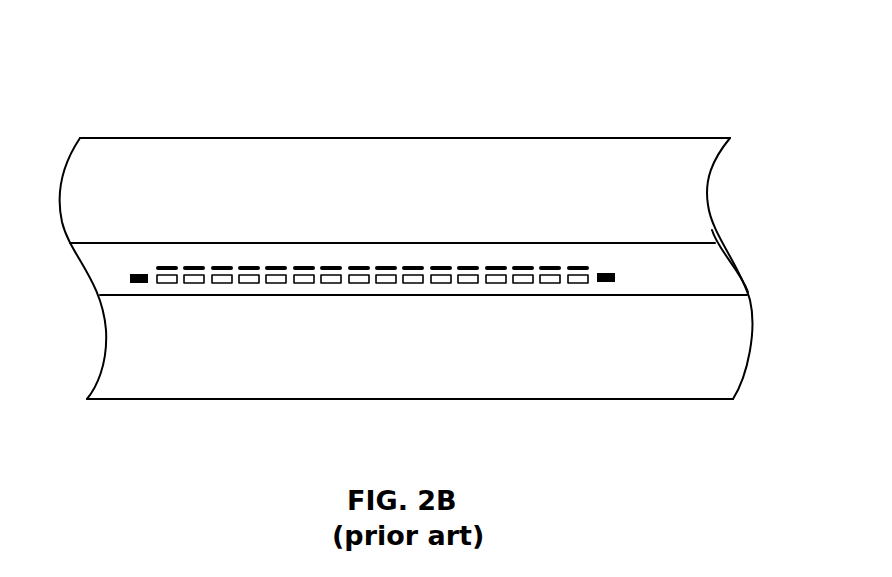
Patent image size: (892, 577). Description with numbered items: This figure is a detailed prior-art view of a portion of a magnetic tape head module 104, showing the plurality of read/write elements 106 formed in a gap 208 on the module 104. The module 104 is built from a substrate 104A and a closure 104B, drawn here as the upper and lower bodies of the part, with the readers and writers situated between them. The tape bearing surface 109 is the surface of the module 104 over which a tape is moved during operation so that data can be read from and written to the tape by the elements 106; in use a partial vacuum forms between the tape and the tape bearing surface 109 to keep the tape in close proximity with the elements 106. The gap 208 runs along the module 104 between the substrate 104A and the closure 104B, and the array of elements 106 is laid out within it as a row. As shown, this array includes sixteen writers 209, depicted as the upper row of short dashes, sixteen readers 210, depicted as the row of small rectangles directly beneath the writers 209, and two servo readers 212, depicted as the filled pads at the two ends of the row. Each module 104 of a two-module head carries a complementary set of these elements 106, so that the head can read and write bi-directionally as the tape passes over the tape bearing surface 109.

The module 104 is at (90, 86).
The substrate 104A is at (192, 138).
The closure 104B is at (250, 399).
The tape bearing surface 109 is at (330, 207).
The read/write elements 106 is at (640, 261).
The gap 208 is at (733, 262).
The writers 209 is at (494, 266).
The readers 210 is at (494, 284).
The servo readers 212 is at (130, 278).